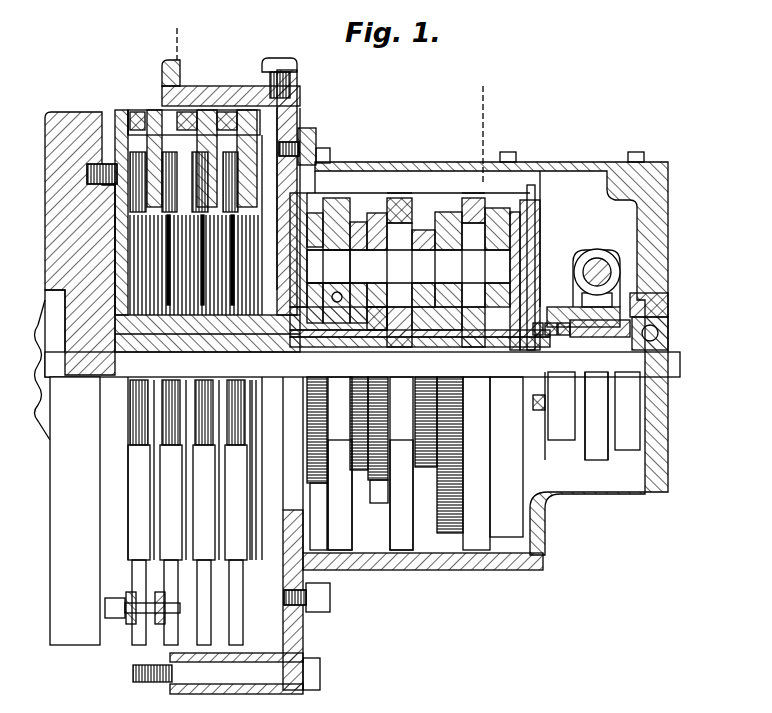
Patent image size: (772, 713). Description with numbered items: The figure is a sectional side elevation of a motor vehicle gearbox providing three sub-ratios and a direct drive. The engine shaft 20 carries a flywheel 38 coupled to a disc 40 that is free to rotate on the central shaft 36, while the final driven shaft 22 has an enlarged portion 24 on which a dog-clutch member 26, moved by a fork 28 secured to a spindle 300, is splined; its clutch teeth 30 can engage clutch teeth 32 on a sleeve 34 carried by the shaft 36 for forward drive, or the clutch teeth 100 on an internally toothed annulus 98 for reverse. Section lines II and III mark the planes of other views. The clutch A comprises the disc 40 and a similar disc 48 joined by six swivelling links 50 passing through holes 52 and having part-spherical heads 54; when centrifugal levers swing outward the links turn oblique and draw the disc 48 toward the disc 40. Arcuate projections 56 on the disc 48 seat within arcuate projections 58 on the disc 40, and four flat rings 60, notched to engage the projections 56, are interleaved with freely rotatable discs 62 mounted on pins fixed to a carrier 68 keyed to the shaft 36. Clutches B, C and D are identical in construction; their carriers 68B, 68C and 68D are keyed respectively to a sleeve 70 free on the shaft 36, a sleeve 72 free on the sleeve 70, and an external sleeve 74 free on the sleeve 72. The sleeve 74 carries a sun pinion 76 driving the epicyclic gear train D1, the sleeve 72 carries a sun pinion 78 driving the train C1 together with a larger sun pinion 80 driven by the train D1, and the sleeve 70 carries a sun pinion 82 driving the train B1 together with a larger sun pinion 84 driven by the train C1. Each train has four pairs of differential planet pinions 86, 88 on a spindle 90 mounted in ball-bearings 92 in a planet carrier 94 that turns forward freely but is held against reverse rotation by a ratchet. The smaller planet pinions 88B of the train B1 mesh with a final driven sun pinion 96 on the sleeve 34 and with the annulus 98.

The engine shaft 20 is at (52, 432).
The final driven shaft 22 is at (676, 380).
The enlarged portion 24 is at (621, 312).
The dog-clutch member 26 is at (597, 445).
The fork 28 is at (571, 300).
The clutch teeth 30 is at (547, 308).
The clutch teeth 32 is at (610, 380).
The sleeve 34 is at (638, 435).
The central shaft 36 is at (544, 420).
The flywheel 38 is at (50, 173).
The disc 40 is at (140, 148).
The disc 48 is at (153, 110).
The swivelling links 50 is at (170, 420).
The holes 52 is at (152, 623).
The part-spherical heads 54 is at (122, 600).
The arcuate projections 56 is at (132, 160).
The arcuate projections 58 is at (132, 152).
The flat rings 60 is at (108, 247).
The freely rotatable discs 62 is at (135, 345).
The carrier 68 is at (160, 386).
The carrier 68B is at (180, 440).
The carrier 68C is at (195, 470).
The carrier 68D is at (285, 150).
The sleeve 70 is at (232, 435).
The sleeve 72 is at (316, 540).
The external sleeve 74 is at (332, 510).
The sun pinion 76 is at (372, 470).
The sun pinion 78 is at (418, 470).
The sun pinion 80 is at (422, 520).
The sun pinion 82 is at (522, 500).
The sun pinion 84 is at (474, 470).
The planet pinion 86 is at (318, 212).
The planet pinion 88 is at (360, 213).
The planet pinions 88B is at (514, 205).
The spindle 90 is at (404, 204).
The ball-bearings 92 is at (340, 240).
The planet carrier 94 is at (333, 572).
The final driven sun pinion 96 is at (572, 420).
The internally toothed annulus 98 is at (490, 214).
The clutch teeth 100 is at (537, 298).
The spindle 300 is at (598, 262).
The clutch A is at (126, 100).
The clutch B is at (158, 100).
The clutch C is at (200, 83).
The clutch D is at (246, 82).
The section line II is at (215, 40).
The section line III is at (520, 98).
The epicyclic gear train D1 is at (331, 144).
The epicyclic gear train C1 is at (403, 165).
The epicyclic gear train B1 is at (471, 165).